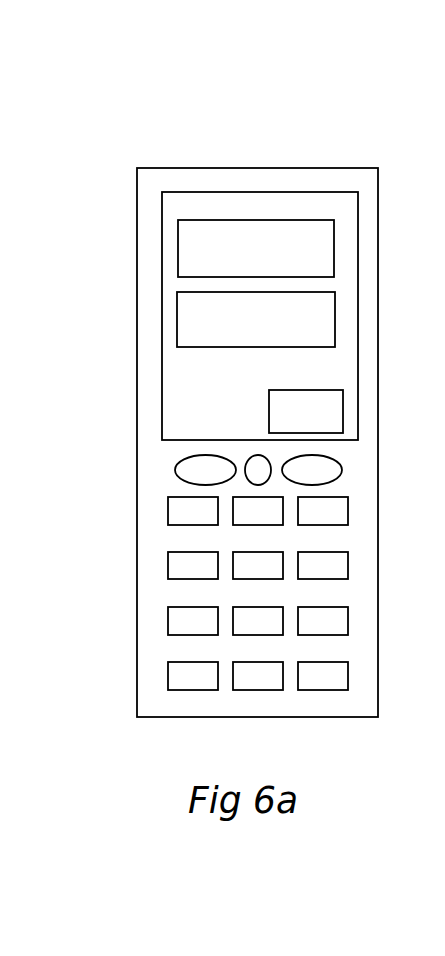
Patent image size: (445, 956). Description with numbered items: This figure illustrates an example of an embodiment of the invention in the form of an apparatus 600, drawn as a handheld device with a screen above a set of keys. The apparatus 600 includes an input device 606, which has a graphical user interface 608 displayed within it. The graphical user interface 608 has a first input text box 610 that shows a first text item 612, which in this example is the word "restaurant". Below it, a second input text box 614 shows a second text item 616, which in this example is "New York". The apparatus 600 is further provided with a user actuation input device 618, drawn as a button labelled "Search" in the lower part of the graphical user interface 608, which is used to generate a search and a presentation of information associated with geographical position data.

The apparatus 600 is at (318, 173).
The input device 606 is at (272, 210).
The graphical user interface 608 is at (222, 422).
The first input text box 610 is at (182, 220).
The first text item 612 is at (208, 238).
The second input text box 614 is at (335, 313).
The second text item 616 is at (267, 319).
The user actuation input device 618 is at (327, 423).